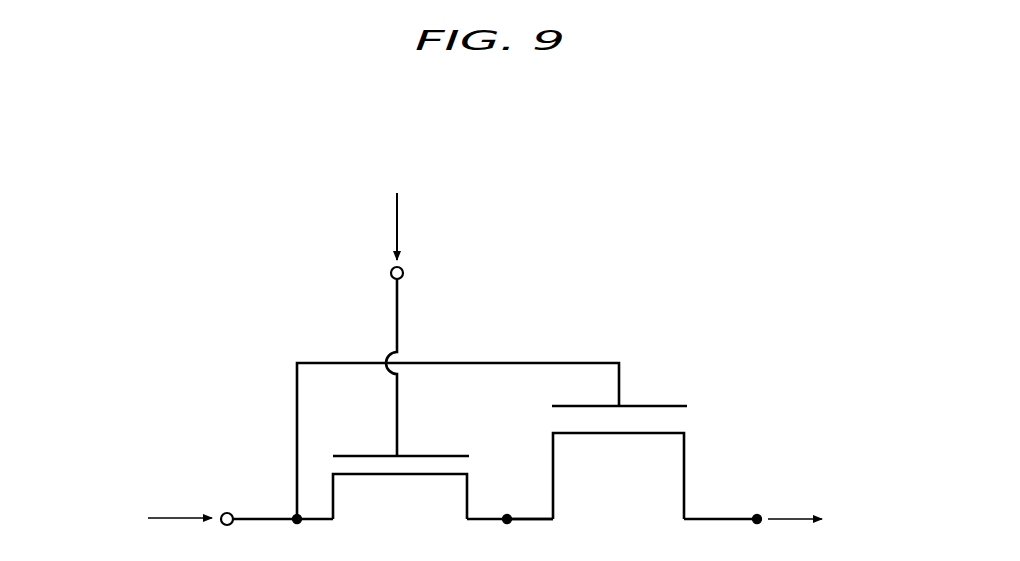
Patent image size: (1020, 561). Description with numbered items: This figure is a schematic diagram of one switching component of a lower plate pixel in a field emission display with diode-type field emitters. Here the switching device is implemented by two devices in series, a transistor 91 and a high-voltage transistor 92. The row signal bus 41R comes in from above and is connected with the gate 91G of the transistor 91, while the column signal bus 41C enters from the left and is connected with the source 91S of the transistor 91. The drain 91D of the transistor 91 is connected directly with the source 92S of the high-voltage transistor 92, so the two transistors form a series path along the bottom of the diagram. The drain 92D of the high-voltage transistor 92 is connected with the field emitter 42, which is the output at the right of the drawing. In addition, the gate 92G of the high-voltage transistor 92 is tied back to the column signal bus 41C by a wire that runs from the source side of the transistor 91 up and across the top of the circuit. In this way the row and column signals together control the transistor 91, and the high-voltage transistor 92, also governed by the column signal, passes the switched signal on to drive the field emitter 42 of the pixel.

The row signal bus 41R is at (402, 211).
The column signal bus 41C is at (154, 518).
The field emitter 42 is at (813, 524).
The transistor 91 is at (401, 490).
The gate of the transistor 91G is at (428, 355).
The source of the transistor 91S is at (272, 500).
The drain of the transistor 91D is at (505, 538).
The high-voltage transistor 92 is at (619, 463).
The gate of the high-voltage transistor 92G is at (490, 441).
The source of the high-voltage transistor 92S is at (540, 540).
The drain of the high-voltage transistor 92D is at (723, 538).